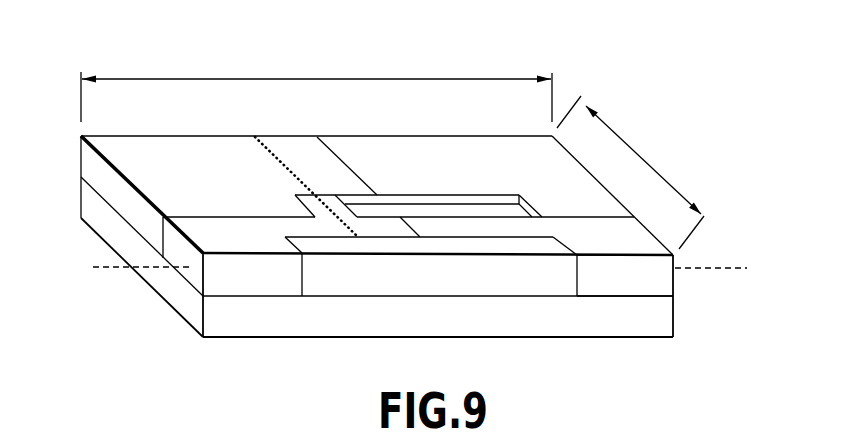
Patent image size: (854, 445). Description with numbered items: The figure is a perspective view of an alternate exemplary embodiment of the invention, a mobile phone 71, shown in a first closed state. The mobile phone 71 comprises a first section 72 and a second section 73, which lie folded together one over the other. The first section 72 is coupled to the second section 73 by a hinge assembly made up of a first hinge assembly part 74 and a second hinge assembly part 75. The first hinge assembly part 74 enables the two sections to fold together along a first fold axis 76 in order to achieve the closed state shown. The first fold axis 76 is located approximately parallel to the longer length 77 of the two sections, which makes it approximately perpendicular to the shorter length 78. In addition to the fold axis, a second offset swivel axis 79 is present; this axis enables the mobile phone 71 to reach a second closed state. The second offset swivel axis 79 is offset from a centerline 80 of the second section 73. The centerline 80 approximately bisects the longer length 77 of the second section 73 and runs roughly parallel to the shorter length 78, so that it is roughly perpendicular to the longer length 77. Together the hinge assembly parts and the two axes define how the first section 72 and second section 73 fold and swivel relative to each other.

The mobile phone 71 is at (158, 336).
The first section 72 is at (80, 193).
The second section 73 is at (80, 151).
The first hinge assembly part 74 is at (540, 280).
The second hinge assembly part 75 is at (623, 280).
The first fold axis 76 is at (700, 268).
The longer length 77 is at (322, 79).
The shorter length 78 is at (638, 156).
The second offset swivel axis 79 is at (266, 151).
The centerline 80 is at (329, 149).